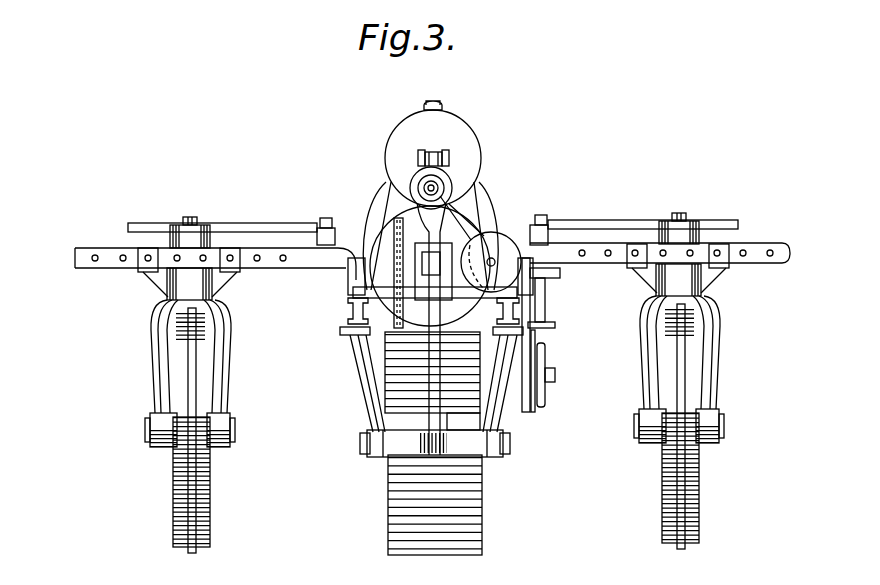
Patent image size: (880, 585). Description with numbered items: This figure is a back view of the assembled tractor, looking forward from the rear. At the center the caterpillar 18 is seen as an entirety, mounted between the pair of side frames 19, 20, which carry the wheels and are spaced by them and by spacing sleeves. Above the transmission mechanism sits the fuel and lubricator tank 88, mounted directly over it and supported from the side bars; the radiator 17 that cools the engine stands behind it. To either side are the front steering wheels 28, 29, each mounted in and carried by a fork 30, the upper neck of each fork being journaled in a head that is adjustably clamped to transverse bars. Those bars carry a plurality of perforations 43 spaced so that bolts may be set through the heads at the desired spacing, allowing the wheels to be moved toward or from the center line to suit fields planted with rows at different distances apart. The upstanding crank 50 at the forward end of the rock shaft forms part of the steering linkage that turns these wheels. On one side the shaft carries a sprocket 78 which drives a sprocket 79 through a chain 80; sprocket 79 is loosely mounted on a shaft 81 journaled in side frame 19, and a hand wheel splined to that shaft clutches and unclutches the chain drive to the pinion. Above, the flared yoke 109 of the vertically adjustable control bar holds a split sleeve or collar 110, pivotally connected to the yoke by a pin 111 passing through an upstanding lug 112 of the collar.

The radiator 17 is at (496, 215).
The caterpillar 18 is at (473, 511).
The side frame 19 is at (512, 424).
The side frame 20 is at (352, 406).
The front wheel 28 is at (173, 508).
The front wheel 29 is at (655, 479).
The fork 30 is at (157, 362).
The perforations 43 is at (122, 262).
The upstanding crank 50 is at (703, 422).
The sprocket 78 is at (523, 282).
The sprocket 79 is at (530, 343).
The chain 80 is at (545, 310).
The shaft 81 is at (555, 373).
The fuel and lubricator tank 88 is at (447, 133).
The yoke 109 is at (452, 178).
The sleeve or collar 110 is at (412, 173).
The pin 111 is at (418, 162).
The upstanding lug 112 is at (435, 156).